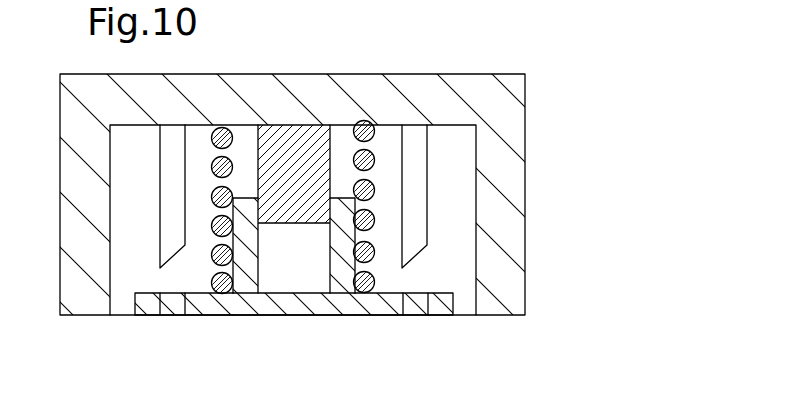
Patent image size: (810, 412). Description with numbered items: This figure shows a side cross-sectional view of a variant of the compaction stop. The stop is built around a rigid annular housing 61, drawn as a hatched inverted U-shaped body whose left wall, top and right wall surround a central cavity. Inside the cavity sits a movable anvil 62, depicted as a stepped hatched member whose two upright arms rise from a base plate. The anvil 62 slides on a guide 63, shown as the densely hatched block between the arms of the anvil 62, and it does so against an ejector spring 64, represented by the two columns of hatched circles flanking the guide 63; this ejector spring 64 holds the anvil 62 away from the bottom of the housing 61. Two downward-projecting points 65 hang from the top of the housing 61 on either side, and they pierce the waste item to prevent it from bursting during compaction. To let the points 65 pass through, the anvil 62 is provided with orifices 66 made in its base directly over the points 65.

The rigid annular housing 61 is at (513, 140).
The movable anvil 62 is at (372, 305).
The guide 63 is at (287, 146).
The ejector spring 64 is at (363, 124).
The points 65 is at (172, 171).
The orifices 66 is at (173, 306).